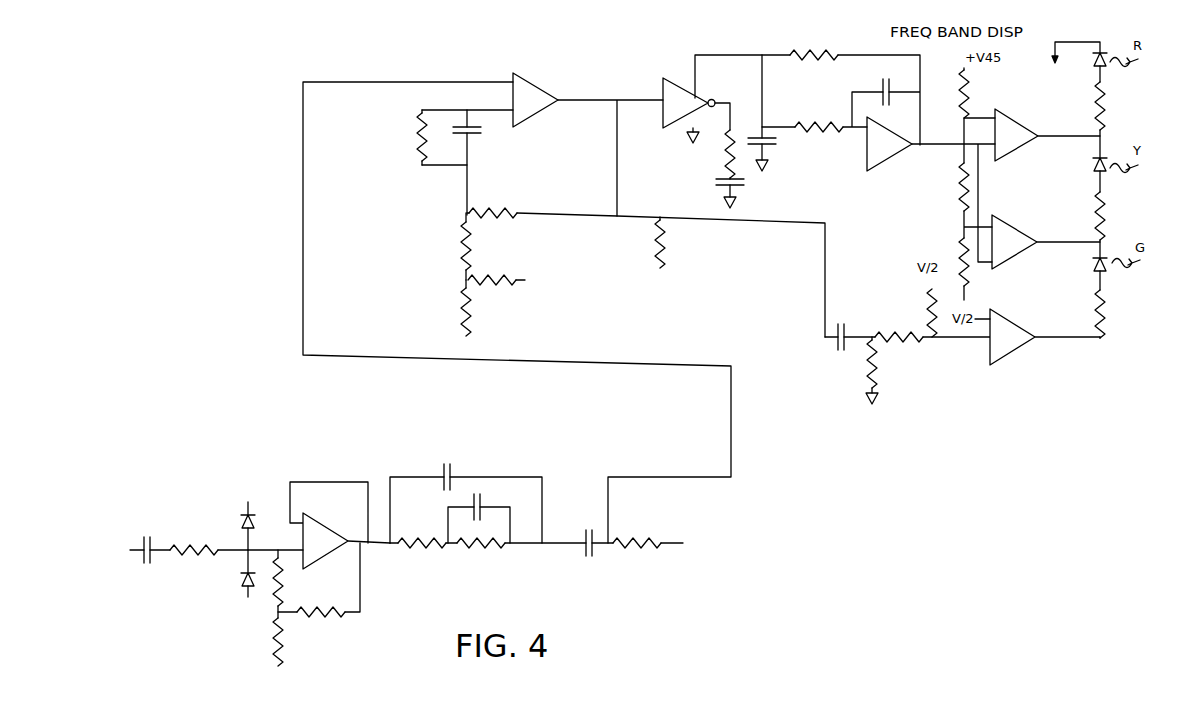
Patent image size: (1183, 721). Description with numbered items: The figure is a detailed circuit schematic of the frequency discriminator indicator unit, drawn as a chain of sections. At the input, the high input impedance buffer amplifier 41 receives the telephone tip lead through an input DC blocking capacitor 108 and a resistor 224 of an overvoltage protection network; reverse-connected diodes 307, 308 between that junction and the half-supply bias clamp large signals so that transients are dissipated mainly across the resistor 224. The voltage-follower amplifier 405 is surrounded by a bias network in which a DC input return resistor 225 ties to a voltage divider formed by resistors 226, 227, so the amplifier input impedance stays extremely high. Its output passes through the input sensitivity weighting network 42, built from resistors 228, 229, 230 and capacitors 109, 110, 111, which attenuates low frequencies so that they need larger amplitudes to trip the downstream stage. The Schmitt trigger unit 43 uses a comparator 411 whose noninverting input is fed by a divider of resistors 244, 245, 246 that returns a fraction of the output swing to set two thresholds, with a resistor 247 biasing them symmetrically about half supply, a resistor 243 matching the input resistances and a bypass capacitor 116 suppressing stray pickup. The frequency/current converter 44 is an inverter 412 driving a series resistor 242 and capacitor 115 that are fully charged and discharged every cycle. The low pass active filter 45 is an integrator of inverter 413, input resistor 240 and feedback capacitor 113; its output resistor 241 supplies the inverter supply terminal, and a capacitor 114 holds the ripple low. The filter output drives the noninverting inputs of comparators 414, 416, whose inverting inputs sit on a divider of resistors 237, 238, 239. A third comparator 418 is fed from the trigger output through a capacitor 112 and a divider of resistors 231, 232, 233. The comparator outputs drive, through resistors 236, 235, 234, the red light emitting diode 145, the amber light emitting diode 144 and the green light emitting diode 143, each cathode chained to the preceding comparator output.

The high input impedance buffer amplifier 41 is at (263, 572).
The input sensitivity weighting network 42 is at (553, 516).
The Schmitt trigger unit 43 is at (522, 200).
The frequency/current converter 44 is at (709, 115).
The low pass active filter 45 is at (834, 133).
The input DC blocking capacitor 108 is at (148, 535).
The resistor 224 is at (194, 545).
The diode 308 is at (243, 512).
The diode 307 is at (240, 586).
The amplifier 405 is at (338, 530).
The resistor 225 is at (288, 589).
The resistor 226 is at (272, 650).
The resistor 227 is at (325, 624).
The capacitor 110 is at (441, 486).
The capacitor 109 is at (485, 506).
The resistor 228 is at (411, 552).
The resistor 229 is at (482, 552).
The capacitor 111 is at (590, 560).
The resistor 230 is at (648, 540).
The resistor 243 is at (418, 139).
The bypass capacitor 116 is at (478, 136).
The comparator 411 is at (521, 121).
The resistor 244 is at (500, 219).
The resistor 245 is at (462, 249).
The resistor 246 is at (462, 309).
The resistor 247 is at (502, 289).
The inverter 412 is at (663, 83).
The resistor 242 is at (727, 159).
The capacitor 115 is at (715, 181).
The capacitor 114 is at (780, 150).
The output resistor 241 is at (802, 61).
The input resistor 240 is at (802, 122).
The feedback capacitor 113 is at (880, 83).
The inverter 413 is at (888, 160).
The resistor 239 is at (953, 93).
The resistor 238 is at (961, 189).
The resistor 237 is at (961, 246).
The comparator 414 is at (1017, 121).
The comparator 416 is at (1022, 226).
The comparator 418 is at (1017, 322).
The capacitor 112 is at (845, 322).
The resistor 231 is at (853, 370).
The resistor 232 is at (915, 327).
The resistor 233 is at (895, 333).
The light emitting diode 145 is at (1089, 67).
The resistor 236 is at (1085, 120).
The light emitting diode 144 is at (1096, 172).
The resistor 235 is at (1096, 213).
The light emitting diode 143 is at (1094, 270).
The resistor 234 is at (1096, 311).